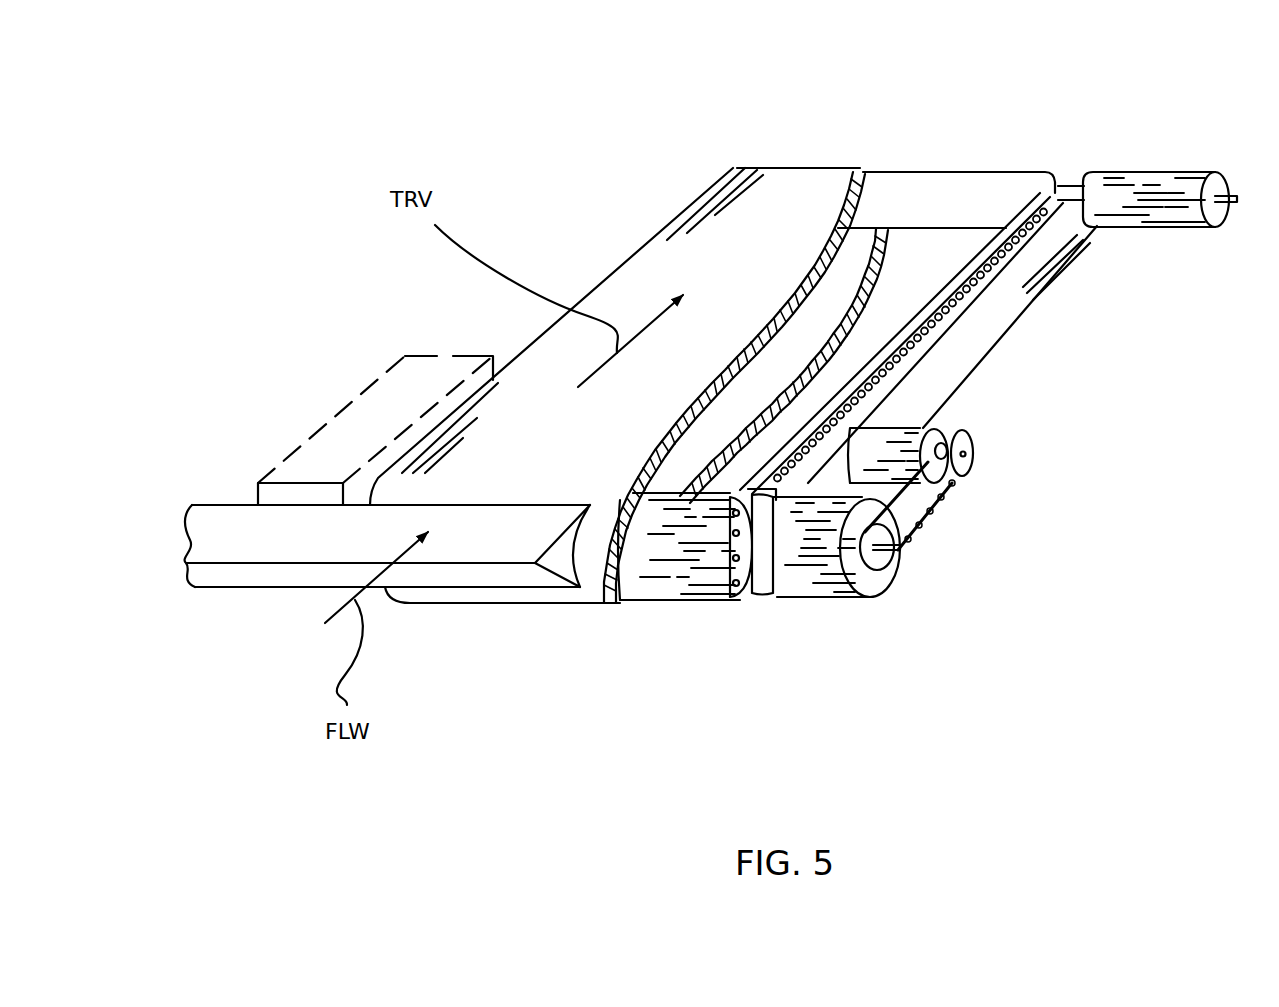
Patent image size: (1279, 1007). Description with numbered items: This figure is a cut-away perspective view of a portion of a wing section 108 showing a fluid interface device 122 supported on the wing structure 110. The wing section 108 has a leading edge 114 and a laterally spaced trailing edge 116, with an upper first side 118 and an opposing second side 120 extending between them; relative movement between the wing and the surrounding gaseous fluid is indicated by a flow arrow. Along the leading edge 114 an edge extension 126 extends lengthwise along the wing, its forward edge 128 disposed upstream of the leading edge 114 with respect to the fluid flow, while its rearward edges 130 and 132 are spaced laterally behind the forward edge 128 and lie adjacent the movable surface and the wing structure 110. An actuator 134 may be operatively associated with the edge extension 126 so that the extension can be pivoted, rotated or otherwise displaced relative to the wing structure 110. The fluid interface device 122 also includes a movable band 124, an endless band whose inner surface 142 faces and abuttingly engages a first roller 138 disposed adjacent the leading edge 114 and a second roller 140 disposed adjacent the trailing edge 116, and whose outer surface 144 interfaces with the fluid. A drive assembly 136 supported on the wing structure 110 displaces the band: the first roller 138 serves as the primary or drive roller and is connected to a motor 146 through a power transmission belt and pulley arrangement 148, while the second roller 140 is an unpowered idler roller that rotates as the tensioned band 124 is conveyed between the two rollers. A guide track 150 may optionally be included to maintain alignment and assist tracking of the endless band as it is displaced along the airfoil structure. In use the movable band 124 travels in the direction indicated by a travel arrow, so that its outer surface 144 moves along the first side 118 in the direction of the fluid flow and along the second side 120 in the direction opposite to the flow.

The wing section 108 is at (1123, 525).
The wing structure 110 is at (960, 350).
The leading edge 114 is at (708, 637).
The trailing edge 116 is at (1062, 150).
The first side 118 is at (803, 207).
The second side 120 is at (601, 675).
The fluid interface device 122 is at (538, 207).
The movable band 124 is at (668, 270).
The edge extension 126 is at (432, 583).
The forward edge 128 is at (287, 563).
The rearward edge 130 is at (232, 505).
The rearward edge 132 is at (512, 590).
The actuator 134 is at (368, 412).
The drive assembly 136 is at (903, 607).
The first roller 138 is at (645, 560).
The second roller 140 is at (950, 195).
The inner surface 142 is at (853, 257).
The outer surface 144 is at (740, 255).
The motor 146 is at (925, 485).
The power transmission belt and pulley arrangement 148 is at (930, 520).
The guide track 150 is at (1030, 238).